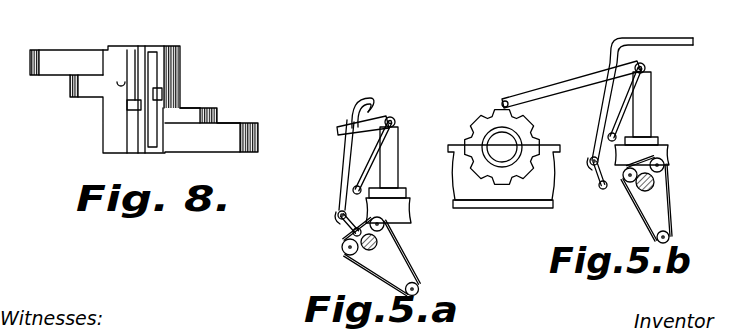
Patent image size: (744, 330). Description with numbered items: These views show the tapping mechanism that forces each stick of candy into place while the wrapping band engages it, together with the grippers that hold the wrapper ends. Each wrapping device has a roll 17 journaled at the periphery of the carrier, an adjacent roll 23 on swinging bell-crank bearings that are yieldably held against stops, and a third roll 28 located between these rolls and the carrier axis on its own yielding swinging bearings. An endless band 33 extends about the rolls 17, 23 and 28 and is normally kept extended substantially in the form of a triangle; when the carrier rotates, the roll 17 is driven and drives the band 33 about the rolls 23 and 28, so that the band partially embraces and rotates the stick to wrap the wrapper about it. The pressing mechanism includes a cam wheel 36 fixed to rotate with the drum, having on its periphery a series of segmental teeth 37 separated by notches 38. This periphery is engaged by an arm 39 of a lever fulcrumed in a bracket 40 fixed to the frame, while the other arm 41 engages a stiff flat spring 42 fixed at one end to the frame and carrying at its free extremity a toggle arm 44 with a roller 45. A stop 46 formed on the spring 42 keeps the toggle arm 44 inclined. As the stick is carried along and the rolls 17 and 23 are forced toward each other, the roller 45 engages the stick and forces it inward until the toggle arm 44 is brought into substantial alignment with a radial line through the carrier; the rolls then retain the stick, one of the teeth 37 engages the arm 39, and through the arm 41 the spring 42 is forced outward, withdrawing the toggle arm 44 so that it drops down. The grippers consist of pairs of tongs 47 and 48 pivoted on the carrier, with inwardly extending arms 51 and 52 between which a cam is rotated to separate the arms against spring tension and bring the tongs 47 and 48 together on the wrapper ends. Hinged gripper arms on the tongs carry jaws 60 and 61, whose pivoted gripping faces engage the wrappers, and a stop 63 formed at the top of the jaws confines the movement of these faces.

In FIG. 5A, the roll 17 is at (348, 247).
In FIG. 5B, the roll 17 is at (629, 180).
In FIG. 5A, the roll 23 is at (385, 226).
In FIG. 5B, the roll 23 is at (664, 165).
In FIG. 5A, the roll 28 is at (418, 288).
In FIG. 5B, the roll 28 is at (669, 236).
In FIG. 5A, the endless band 33 is at (398, 247).
In FIG. 5B, the endless band 33 is at (667, 198).
In FIG. 5B, the cam wheel 36 is at (490, 120).
In FIG. 5B, the segmental teeth 37 is at (538, 128).
In FIG. 5B, the notches 38 is at (520, 183).
In FIG. 5A, the arm 39 is at (346, 126).
In FIG. 5B, the arm 39 is at (571, 80).
In FIG. 5A, the bracket 40 is at (392, 148).
In FIG. 5B, the bracket 40 is at (650, 118).
In FIG. 5A, the arm 41 is at (370, 164).
In FIG. 5B, the arm 41 is at (635, 90).
In FIG. 5A, the flat spring 42 is at (346, 174).
In FIG. 5B, the flat spring 42 is at (597, 125).
In FIG. 5A, the toggle arm 44 is at (352, 232).
In FIG. 5B, the toggle arm 44 is at (600, 175).
In FIG. 5A, the roller 45 is at (361, 240).
In FIG. 5B, the roller 45 is at (600, 187).
In FIG. 5A, the stop 46 is at (337, 213).
In FIG. 5B, the stop 46 is at (591, 165).
In FIG. 8, the tong 47 is at (95, 62).
In FIG. 8, the tong 48 is at (193, 133).
In FIG. 8, the arm 51 is at (95, 88).
In FIG. 8, the arm 52 is at (197, 107).
In FIG. 8, the jaw 60 is at (140, 128).
In FIG. 8, the jaw 61 is at (157, 63).
In FIG. 8, the stop 63 is at (133, 105).